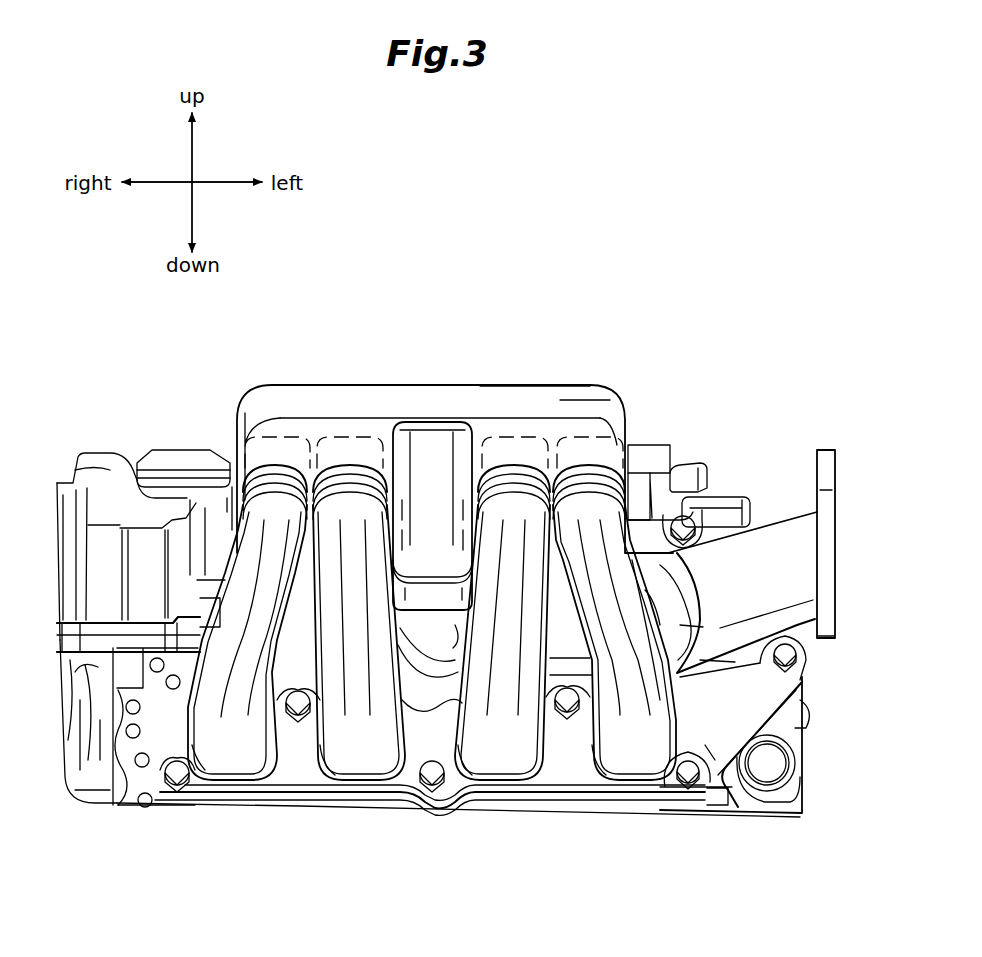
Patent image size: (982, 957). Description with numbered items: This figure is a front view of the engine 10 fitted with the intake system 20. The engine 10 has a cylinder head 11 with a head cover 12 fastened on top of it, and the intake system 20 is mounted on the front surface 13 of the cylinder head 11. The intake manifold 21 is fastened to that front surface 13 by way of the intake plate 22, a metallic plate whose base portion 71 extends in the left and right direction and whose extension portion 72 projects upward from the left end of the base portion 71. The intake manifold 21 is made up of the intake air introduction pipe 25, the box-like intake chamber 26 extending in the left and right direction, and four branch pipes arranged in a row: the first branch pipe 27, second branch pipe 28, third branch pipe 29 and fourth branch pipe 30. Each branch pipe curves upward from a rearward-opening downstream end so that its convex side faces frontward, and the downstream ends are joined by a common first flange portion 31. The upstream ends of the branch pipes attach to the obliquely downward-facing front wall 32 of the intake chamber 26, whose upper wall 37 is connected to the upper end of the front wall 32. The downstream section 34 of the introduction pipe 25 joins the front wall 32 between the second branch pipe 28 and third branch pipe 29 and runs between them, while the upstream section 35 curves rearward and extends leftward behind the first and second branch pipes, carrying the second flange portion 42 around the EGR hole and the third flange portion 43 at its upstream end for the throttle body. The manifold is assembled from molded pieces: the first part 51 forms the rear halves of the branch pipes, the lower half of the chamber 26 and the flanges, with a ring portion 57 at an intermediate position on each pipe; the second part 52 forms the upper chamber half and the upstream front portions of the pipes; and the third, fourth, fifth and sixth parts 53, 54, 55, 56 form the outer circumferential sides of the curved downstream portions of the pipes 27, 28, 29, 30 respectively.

The engine 10 is at (688, 322).
The cylinder head 11 is at (85, 782).
The head cover 12 is at (82, 492).
The front surface 13 is at (140, 785).
The intake system 20 is at (265, 365).
The intake manifold 21 is at (315, 355).
The intake plate 22 is at (803, 740).
The intake air introduction pipe 25 is at (428, 440).
The intake chamber 26 is at (543, 382).
The first branch pipe 27 is at (643, 755).
The second branch pipe 28 is at (512, 755).
The third branch pipe 29 is at (375, 760).
The fourth branch pipe 30 is at (238, 760).
The first flange portion 31 is at (297, 777).
The front wall 32 is at (378, 425).
The downstream section 34 is at (447, 440).
The upstream section 35 is at (780, 525).
The upper wall 37 is at (581, 393).
The second flange portion 42 is at (698, 530).
The third flange portion 43 is at (827, 450).
The first part 51 is at (826, 642).
The second part 52 is at (508, 400).
The third part 53 is at (608, 760).
The fourth part 54 is at (478, 762).
The fifth part 55 is at (350, 757).
The sixth part 56 is at (207, 752).
The ring portion 57 is at (347, 483).
The base portion 71 is at (710, 755).
The extension portion 72 is at (763, 690).